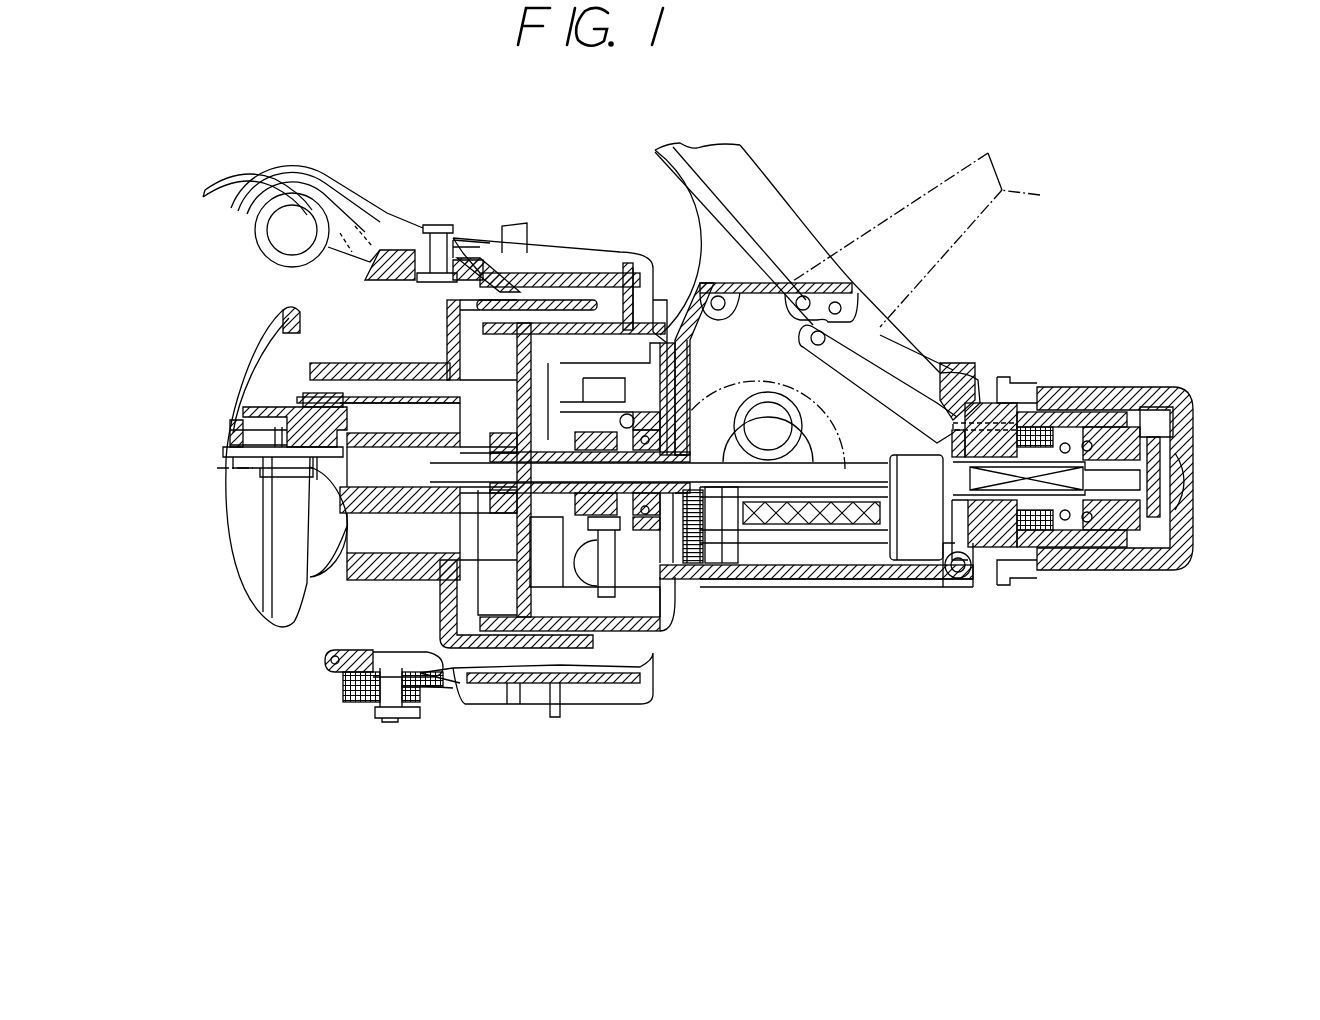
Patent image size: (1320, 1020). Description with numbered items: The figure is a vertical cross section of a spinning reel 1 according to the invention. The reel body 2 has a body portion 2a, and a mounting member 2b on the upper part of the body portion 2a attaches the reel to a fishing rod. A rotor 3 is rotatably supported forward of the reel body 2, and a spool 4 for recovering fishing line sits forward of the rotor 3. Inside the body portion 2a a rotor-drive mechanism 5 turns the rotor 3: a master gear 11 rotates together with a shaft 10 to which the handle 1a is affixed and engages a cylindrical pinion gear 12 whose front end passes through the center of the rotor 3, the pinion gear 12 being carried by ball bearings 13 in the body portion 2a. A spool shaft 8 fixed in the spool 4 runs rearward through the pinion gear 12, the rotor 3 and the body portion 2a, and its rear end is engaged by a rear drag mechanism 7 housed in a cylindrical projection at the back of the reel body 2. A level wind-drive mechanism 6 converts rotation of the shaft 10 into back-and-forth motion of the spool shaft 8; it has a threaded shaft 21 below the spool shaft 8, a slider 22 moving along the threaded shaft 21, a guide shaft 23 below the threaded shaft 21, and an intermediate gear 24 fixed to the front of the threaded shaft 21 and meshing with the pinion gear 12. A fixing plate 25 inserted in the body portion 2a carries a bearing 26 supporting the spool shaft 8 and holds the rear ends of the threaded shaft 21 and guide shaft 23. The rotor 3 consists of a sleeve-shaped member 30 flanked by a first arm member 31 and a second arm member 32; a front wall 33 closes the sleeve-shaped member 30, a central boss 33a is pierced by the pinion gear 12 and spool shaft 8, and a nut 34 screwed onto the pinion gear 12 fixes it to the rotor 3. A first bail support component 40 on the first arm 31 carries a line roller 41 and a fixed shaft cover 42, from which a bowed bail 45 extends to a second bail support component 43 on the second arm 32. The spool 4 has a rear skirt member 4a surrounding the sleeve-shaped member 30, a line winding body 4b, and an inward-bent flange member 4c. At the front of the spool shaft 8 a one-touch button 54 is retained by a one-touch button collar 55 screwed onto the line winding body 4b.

The spinning reel 1 is at (1018, 136).
The handle 1a is at (1050, 194).
The reel body 2 is at (920, 330).
The body portion 2a is at (905, 352).
The mounting member 2b is at (750, 182).
The rotor 3 is at (672, 630).
The spool 4 is at (358, 318).
The skirt member 4a is at (480, 648).
The line winding body 4b is at (350, 570).
The flange member 4c is at (282, 310).
The rotor-drive mechanism 5 is at (690, 412).
The level wind-drive mechanism 6 is at (888, 560).
The rear drag mechanism 7 is at (1185, 375).
The spool shaft 8 is at (800, 478).
The shaft 10 is at (782, 425).
The master gear 11 is at (808, 296).
The pinion gear 12 is at (580, 435).
The ball bearings 13 is at (690, 520).
The threaded shaft 21 is at (765, 535).
The slider 22 is at (918, 548).
The guide shaft 23 is at (778, 530).
The intermediate gear 24 is at (722, 530).
The fixing plate 25 is at (950, 440).
The bearing 26 is at (955, 585).
The sleeve-shaped member 30 is at (553, 323).
The first arm member 31 is at (520, 270).
The second arm member 32 is at (520, 680).
The front wall 33 is at (452, 345).
The boss 33a is at (446, 603).
The nut 34 is at (495, 430).
The first bail support component 40 is at (365, 168).
The line roller 41 is at (293, 178).
The fixed shaft cover 42 is at (318, 190).
The second bail support component 43 is at (328, 660).
The bail 45 is at (228, 172).
The one-touch button 54 is at (232, 452).
The one-touch button collar 55 is at (245, 413).